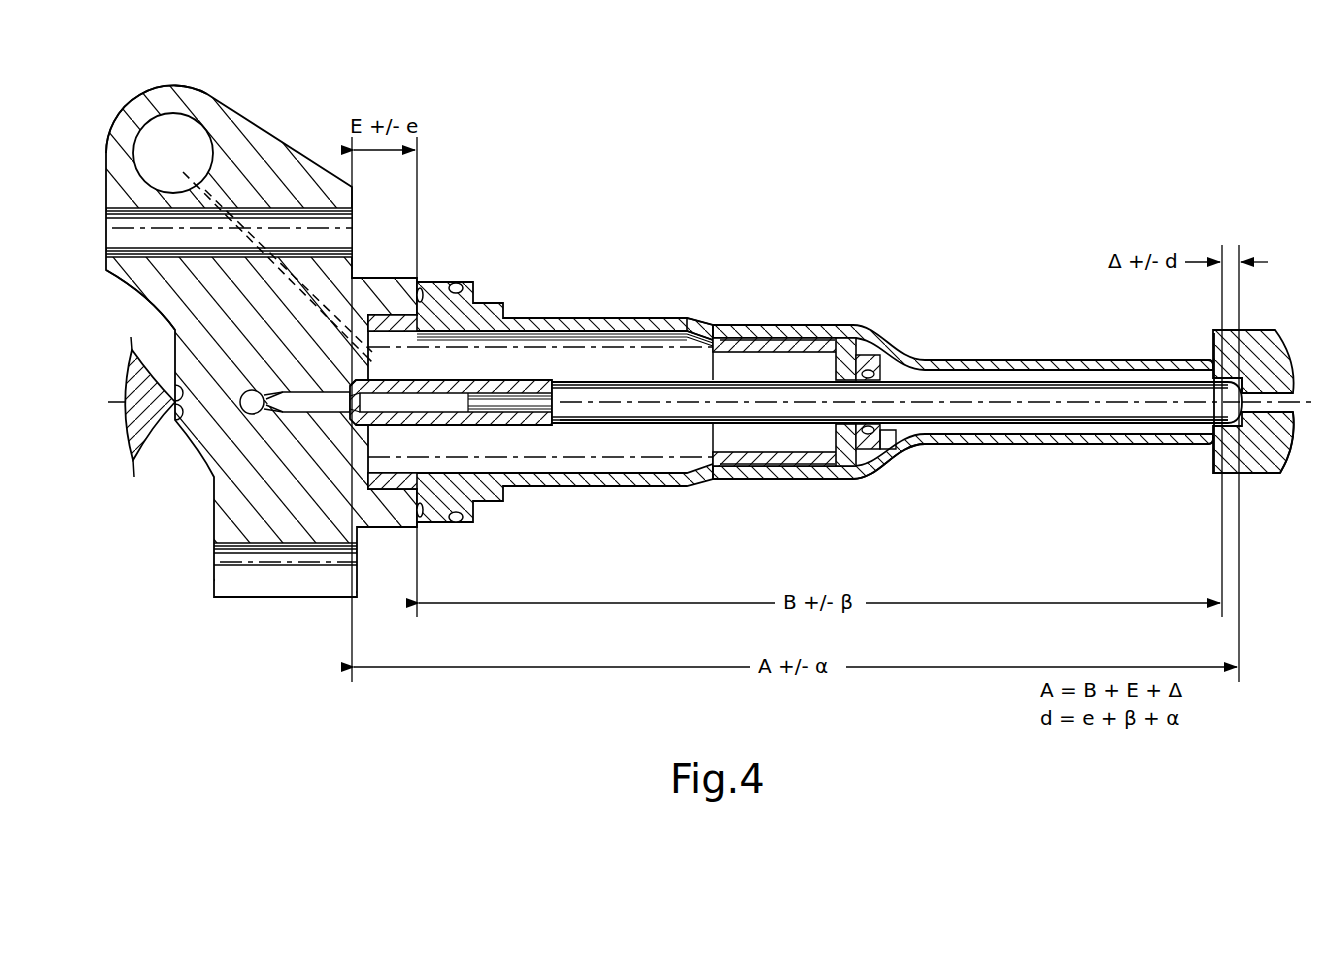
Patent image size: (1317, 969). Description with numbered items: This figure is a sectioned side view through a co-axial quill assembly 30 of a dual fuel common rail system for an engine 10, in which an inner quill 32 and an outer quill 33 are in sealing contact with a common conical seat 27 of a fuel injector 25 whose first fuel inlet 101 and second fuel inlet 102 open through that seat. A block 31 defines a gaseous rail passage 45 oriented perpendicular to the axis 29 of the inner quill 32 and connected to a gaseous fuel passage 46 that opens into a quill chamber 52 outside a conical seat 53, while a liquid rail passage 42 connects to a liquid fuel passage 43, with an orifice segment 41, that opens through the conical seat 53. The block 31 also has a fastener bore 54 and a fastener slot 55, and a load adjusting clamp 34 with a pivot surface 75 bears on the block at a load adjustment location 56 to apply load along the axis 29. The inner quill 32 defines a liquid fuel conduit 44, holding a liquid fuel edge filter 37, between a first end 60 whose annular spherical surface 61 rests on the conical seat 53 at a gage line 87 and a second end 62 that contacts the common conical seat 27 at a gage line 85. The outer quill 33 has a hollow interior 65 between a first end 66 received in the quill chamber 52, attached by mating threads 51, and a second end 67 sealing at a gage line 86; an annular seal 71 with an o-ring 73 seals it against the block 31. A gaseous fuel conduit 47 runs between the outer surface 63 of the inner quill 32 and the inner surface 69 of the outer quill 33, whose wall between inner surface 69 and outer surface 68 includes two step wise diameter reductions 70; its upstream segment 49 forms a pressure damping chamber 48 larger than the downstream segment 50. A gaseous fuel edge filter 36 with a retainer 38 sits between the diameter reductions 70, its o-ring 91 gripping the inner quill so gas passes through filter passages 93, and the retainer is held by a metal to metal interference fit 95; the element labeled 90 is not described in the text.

The engine 10 is at (1290, 425).
The fuel injector 25 is at (1213, 462).
The common conical seat 27 is at (1214, 365).
The axis 29 is at (1130, 400).
The co-axial quill assembly 30 is at (706, 214).
The block 31 is at (278, 130).
The inner quill 32 is at (1048, 385).
The outer quill 33 is at (906, 455).
The load adjusting clamp 34 is at (136, 470).
The gaseous fuel edge filter 36 is at (786, 341).
The liquid fuel edge filter 37 is at (426, 394).
The retainer 38 is at (846, 345).
The orifice segment 41 is at (263, 412).
The liquid rail passage 42 is at (250, 414).
The liquid fuel passage 43 is at (323, 413).
The liquid fuel conduit 44 is at (490, 420).
The gaseous rail passage 45 is at (176, 113).
The gaseous fuel passage 46 is at (186, 180).
The gaseous fuel conduit 47 is at (605, 482).
The pressure damping chamber 48 is at (650, 482).
The upstream segment 49 is at (560, 482).
The downstream segment 50 is at (986, 444).
The mating threads 51 is at (382, 318).
The quill chamber 52 is at (386, 494).
The conical seat 53 is at (352, 427).
The fastener bore 54 is at (143, 250).
The fastener slot 55 is at (250, 597).
The load adjustment location 56 is at (172, 417).
The first end 60 is at (348, 397).
The annular spherical surface 61 is at (348, 381).
The second end 62 is at (1258, 382).
The outer surface 63 is at (1090, 420).
The hollow interior 65 is at (480, 500).
The first end 66 is at (366, 484).
The second end 67 is at (1240, 366).
The outer surface 68 is at (536, 318).
The inner surface 69 is at (668, 332).
The step wise diameter reductions 70 is at (708, 328).
The annular seal 71 is at (422, 290).
The o-ring 73 is at (421, 520).
The pivot surface 75 is at (174, 388).
The gage line 85 is at (1240, 568).
The gage line 86 is at (1222, 545).
The gage line 87 is at (355, 634).
The seal retainer 90 is at (866, 468).
The o-ring 91 is at (866, 352).
The filter passages 93 is at (820, 340).
The metal to metal interference fit 95 is at (836, 462).
The first fuel inlet 101 is at (1260, 455).
The second fuel inlet 102 is at (1280, 342).